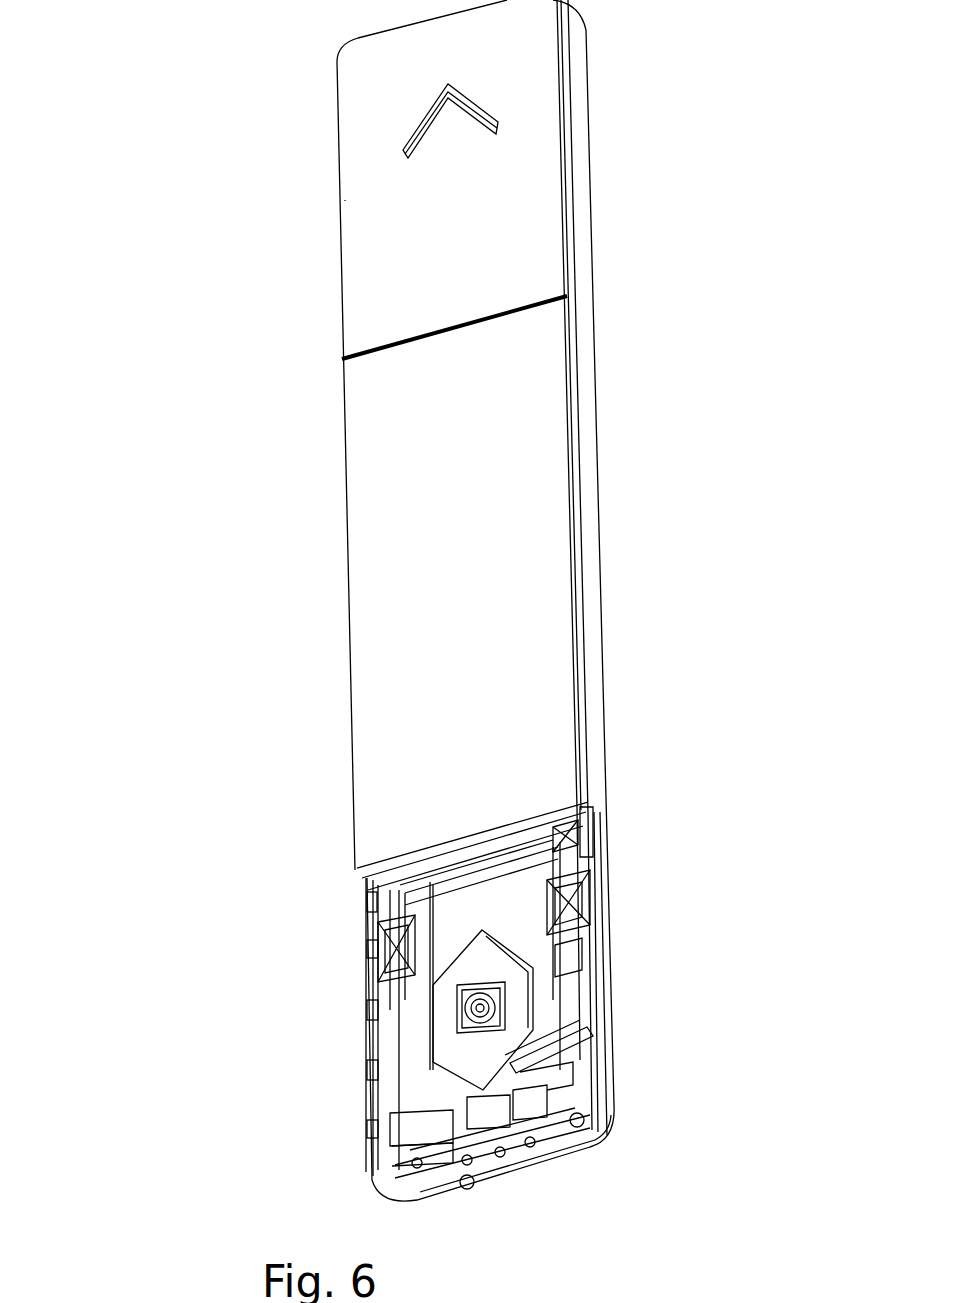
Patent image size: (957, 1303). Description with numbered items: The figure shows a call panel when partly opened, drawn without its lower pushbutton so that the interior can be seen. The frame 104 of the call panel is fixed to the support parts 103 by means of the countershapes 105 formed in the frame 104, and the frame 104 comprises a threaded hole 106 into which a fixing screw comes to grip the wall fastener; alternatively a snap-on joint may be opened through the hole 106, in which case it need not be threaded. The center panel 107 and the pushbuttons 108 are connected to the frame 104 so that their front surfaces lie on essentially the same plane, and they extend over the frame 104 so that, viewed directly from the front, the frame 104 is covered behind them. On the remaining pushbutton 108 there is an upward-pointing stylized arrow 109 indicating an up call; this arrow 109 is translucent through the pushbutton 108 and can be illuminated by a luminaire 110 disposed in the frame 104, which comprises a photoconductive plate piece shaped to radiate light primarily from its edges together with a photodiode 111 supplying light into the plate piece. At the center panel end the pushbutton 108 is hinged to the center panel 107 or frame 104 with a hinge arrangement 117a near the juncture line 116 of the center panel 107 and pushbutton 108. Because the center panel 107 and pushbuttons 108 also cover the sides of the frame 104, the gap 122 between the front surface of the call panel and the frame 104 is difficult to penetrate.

The support parts 103 is at (593, 942).
The frame 104 is at (367, 898).
The countershapes 105 is at (593, 865).
The threaded hole 106 is at (513, 1175).
The center panel 107 is at (362, 538).
The pushbuttons 108 is at (360, 258).
The arrow figure 109 is at (405, 157).
The luminaire 110 is at (547, 1020).
The photodiode 111 is at (457, 1020).
The seam line 116 is at (353, 360).
The hinge arrangement 117a is at (587, 792).
The gap 122 is at (575, 222).